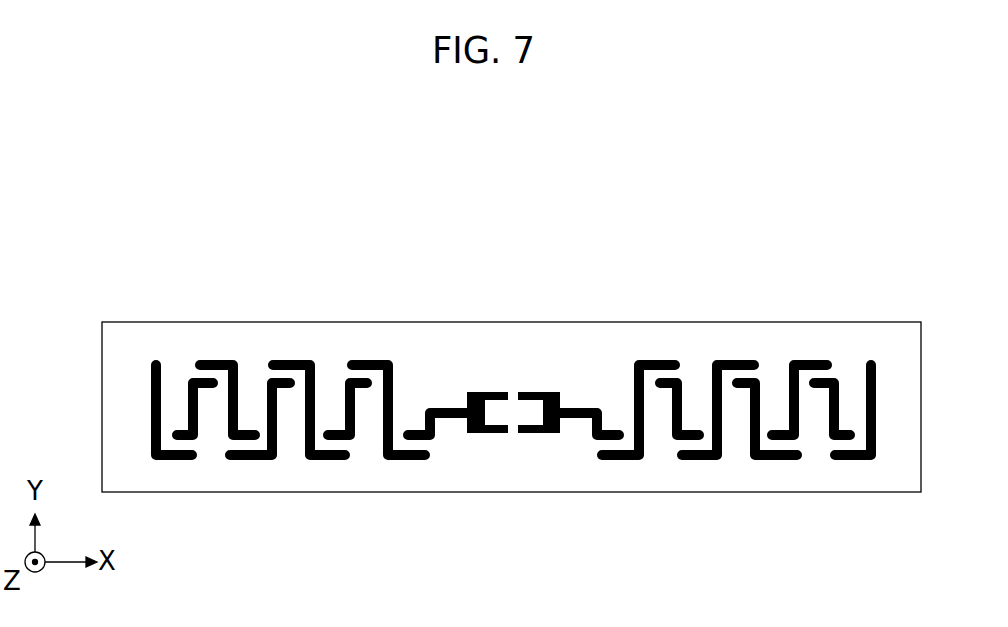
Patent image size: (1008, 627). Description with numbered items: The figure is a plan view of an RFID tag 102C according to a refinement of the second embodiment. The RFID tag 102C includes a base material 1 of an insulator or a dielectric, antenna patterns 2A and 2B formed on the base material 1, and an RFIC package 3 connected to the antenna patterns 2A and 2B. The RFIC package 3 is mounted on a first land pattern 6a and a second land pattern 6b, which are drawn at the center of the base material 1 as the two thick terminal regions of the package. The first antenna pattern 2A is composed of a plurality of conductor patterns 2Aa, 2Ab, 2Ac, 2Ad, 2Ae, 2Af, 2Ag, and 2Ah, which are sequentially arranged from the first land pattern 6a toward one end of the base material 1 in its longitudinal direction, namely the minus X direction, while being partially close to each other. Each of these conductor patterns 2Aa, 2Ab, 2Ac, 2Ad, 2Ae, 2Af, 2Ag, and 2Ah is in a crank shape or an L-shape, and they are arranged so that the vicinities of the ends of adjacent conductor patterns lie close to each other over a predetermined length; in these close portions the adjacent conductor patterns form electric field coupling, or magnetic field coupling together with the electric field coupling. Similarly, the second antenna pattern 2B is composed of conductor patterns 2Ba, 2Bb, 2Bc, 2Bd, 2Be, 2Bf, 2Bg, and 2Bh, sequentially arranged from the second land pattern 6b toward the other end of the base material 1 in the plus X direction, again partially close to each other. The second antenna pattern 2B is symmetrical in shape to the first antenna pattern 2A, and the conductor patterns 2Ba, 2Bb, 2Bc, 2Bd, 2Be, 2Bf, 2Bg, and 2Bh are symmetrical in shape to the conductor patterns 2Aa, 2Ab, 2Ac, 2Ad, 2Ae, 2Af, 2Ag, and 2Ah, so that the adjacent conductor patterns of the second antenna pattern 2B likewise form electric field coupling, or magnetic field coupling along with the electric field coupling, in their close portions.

The RFID tag 102C is at (645, 159).
The base material 1 is at (532, 322).
The first antenna pattern 2A is at (435, 268).
The second antenna pattern 2B is at (878, 268).
The conductor pattern 2Aa is at (440, 408).
The conductor pattern 2Ab is at (372, 363).
The conductor pattern 2Ac is at (343, 390).
The conductor pattern 2Ad is at (290, 363).
The conductor pattern 2Ae is at (242, 460).
The conductor pattern 2Af is at (210, 363).
The conductor pattern 2Ag is at (188, 392).
The conductor pattern 2Ah is at (168, 460).
The conductor pattern 2Ba is at (583, 408).
The conductor pattern 2Bb is at (649, 363).
The conductor pattern 2Bc is at (688, 386).
The conductor pattern 2Bd is at (734, 363).
The conductor pattern 2Be is at (780, 460).
The conductor pattern 2Bf is at (814, 363).
The conductor pattern 2Bg is at (836, 388).
The conductor pattern 2Bh is at (855, 460).
The RFIC package 3 is at (514, 411).
The first land pattern 6a is at (473, 435).
The second land pattern 6b is at (548, 435).